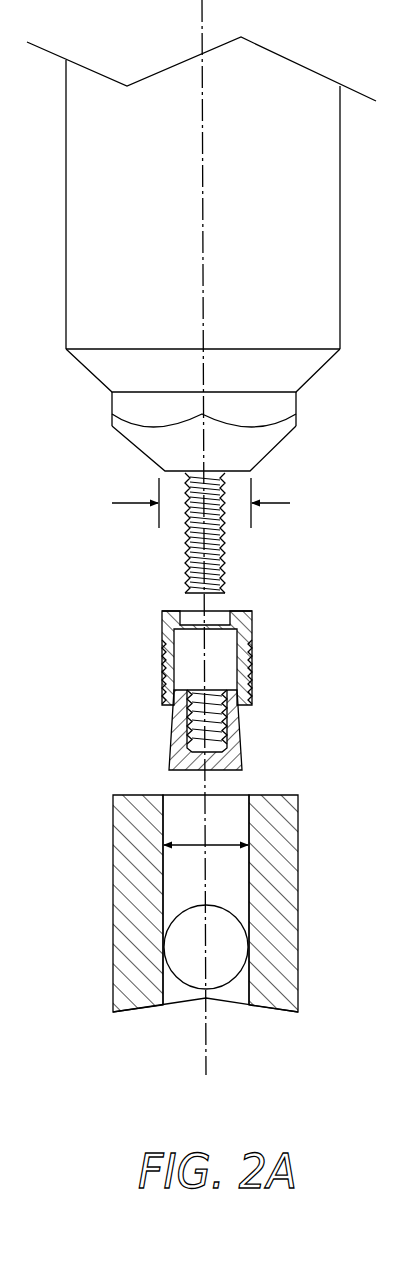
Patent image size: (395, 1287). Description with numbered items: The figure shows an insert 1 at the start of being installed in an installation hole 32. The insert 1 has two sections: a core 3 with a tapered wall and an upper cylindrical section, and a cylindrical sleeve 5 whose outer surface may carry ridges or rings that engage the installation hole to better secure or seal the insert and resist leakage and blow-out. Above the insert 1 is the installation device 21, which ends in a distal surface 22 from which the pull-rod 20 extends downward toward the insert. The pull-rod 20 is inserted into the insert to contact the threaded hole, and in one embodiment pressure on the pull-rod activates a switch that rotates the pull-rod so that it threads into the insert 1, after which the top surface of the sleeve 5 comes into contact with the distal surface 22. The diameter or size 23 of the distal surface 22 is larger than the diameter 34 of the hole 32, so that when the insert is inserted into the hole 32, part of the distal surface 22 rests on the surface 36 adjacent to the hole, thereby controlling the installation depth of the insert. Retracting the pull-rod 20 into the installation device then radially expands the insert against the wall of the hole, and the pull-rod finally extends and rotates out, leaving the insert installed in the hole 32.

The welding gun body 21 is at (333, 68).
The distal surface 22 is at (165, 486).
The diameter or size of the distal surface 23 is at (145, 511).
The pull-rod 20 is at (218, 556).
The insert 1 is at (134, 641).
The cylindrical sleeve 5 is at (153, 678).
The core 3 is at (161, 739).
The diameter of the hole 34 is at (190, 845).
The installation hole 32 is at (237, 806).
The surface adjacent to hole 36 is at (130, 798).